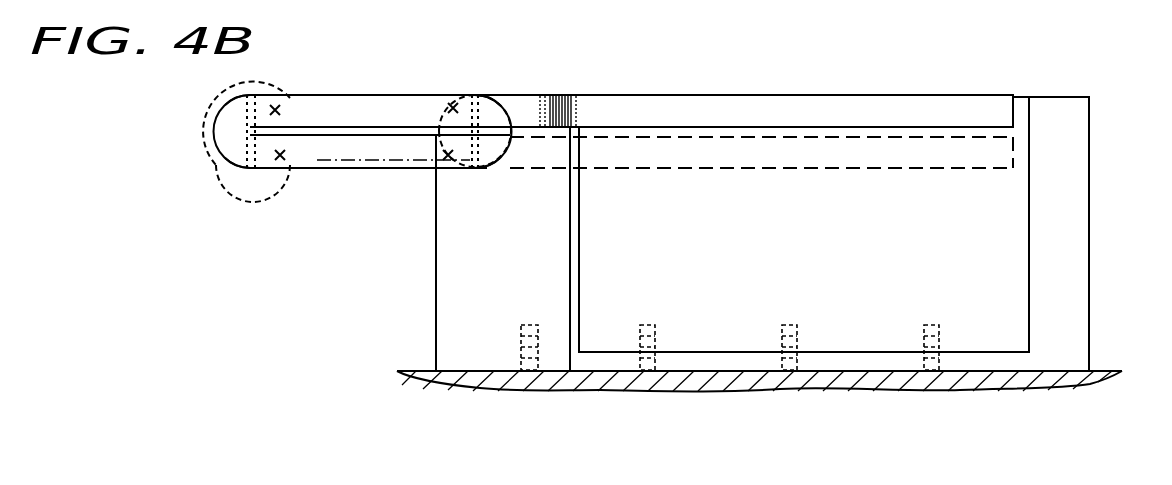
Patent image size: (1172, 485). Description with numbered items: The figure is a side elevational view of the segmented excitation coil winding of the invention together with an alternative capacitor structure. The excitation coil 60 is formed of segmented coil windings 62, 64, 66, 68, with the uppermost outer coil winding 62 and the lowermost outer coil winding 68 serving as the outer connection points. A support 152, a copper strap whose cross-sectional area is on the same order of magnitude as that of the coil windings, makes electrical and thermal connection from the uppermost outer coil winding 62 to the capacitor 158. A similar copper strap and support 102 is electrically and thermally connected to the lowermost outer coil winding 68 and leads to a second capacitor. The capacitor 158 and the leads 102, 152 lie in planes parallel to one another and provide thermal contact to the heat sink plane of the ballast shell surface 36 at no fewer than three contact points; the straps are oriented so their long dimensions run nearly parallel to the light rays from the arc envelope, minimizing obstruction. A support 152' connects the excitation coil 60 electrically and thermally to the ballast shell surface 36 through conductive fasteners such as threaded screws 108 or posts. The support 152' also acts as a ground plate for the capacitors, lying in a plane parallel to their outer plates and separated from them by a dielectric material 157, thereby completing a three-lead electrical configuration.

The ballast shell surface 36 is at (424, 371).
The excitation coil 60 is at (372, 86).
The uppermost outer coil winding 62 is at (236, 113).
The coil winding 64 is at (278, 110).
The coil winding 66 is at (280, 157).
The lowermost outer coil winding 68 is at (233, 152).
The copper strap and support 102 is at (792, 158).
The threaded screws 108 is at (925, 325).
The support 152 is at (579, 91).
The support 152' is at (424, 255).
The dielectric material 157 is at (1045, 118).
The capacitor 158 is at (972, 216).